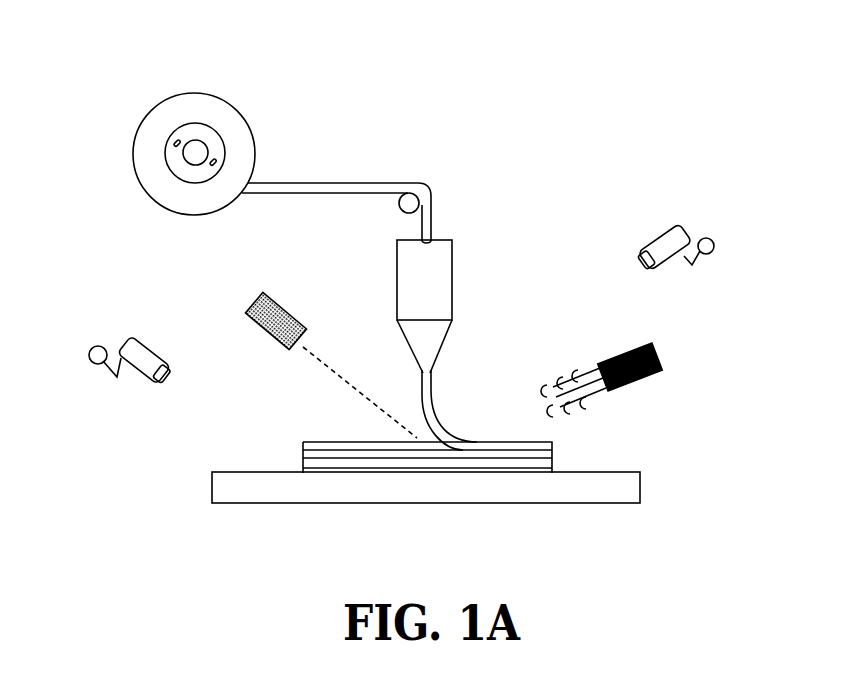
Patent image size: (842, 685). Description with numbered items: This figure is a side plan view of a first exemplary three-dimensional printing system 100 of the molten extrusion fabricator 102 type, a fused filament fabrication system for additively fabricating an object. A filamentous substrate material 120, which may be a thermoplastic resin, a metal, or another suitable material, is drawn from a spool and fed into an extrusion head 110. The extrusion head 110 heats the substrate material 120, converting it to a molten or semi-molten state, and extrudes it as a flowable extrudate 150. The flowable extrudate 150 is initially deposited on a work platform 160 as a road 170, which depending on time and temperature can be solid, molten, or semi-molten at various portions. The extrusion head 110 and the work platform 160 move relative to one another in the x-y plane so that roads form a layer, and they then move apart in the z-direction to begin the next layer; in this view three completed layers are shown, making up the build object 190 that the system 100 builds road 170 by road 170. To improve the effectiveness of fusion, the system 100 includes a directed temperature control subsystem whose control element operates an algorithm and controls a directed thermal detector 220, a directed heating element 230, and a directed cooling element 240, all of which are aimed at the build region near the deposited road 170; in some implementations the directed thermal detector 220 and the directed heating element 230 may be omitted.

The 3D printing system 100 is at (87, 41).
The molten extrusion fabricator 102 is at (94, 70).
The extrusion head 110 is at (452, 266).
The filamentous substrate material 120 is at (305, 184).
The flowable extrudate 150 is at (433, 408).
The work platform 160 is at (641, 483).
The road 170 is at (562, 439).
The build object 190 is at (298, 470).
The directed thermal detector 220 is at (672, 228).
The directed heating element 230 is at (278, 296).
The directed cooling element 240 is at (662, 352).